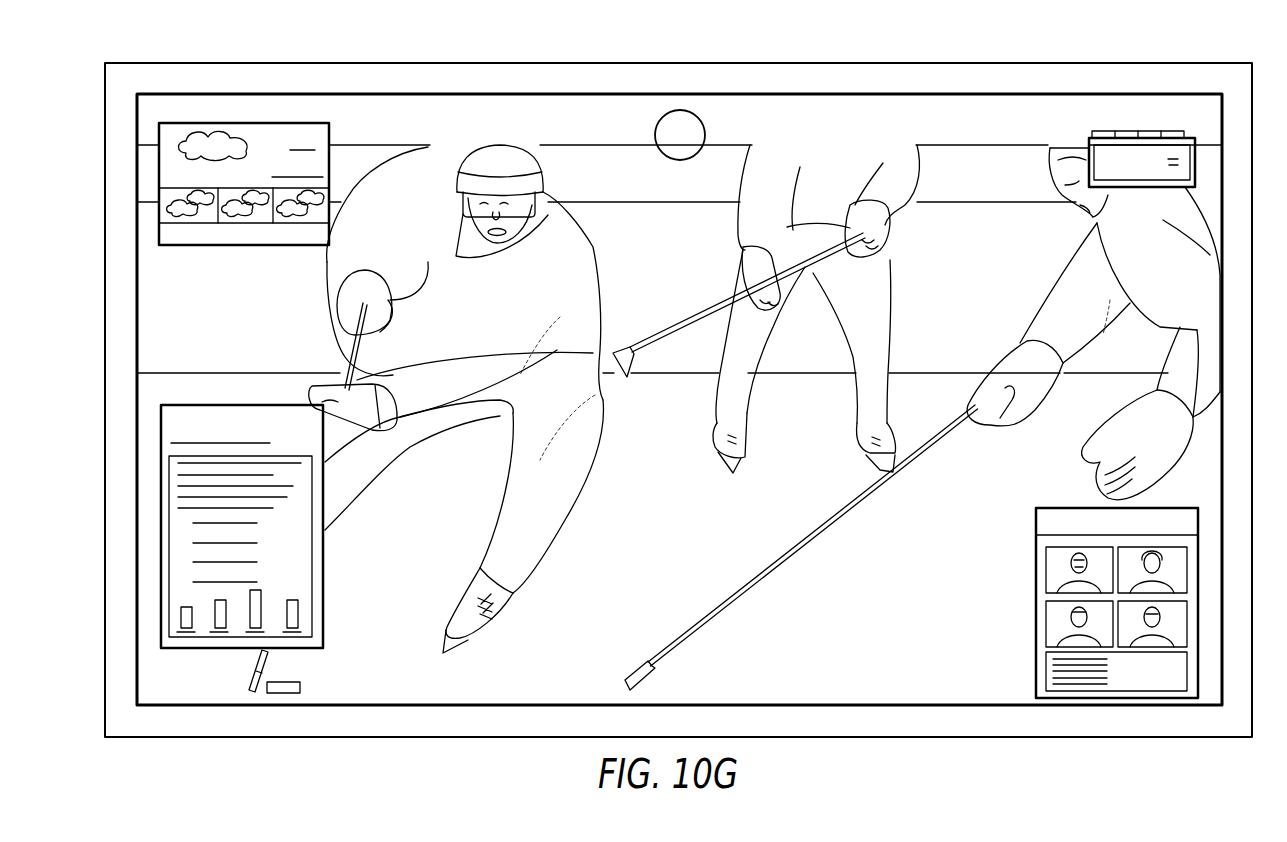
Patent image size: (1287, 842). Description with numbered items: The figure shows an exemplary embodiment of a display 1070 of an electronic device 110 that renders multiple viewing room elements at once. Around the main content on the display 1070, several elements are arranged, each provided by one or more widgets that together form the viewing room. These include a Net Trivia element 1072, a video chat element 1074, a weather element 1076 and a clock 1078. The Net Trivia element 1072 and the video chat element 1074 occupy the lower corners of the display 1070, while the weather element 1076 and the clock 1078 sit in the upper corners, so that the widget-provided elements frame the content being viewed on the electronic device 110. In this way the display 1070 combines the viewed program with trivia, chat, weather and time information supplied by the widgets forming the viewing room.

The electronic device 110 is at (151, 80).
The display 1070 is at (652, 236).
The Net Trivia 1072 is at (220, 648).
The video chat 1074 is at (1120, 698).
The weather 1076 is at (244, 123).
The clock 1078 is at (1135, 131).